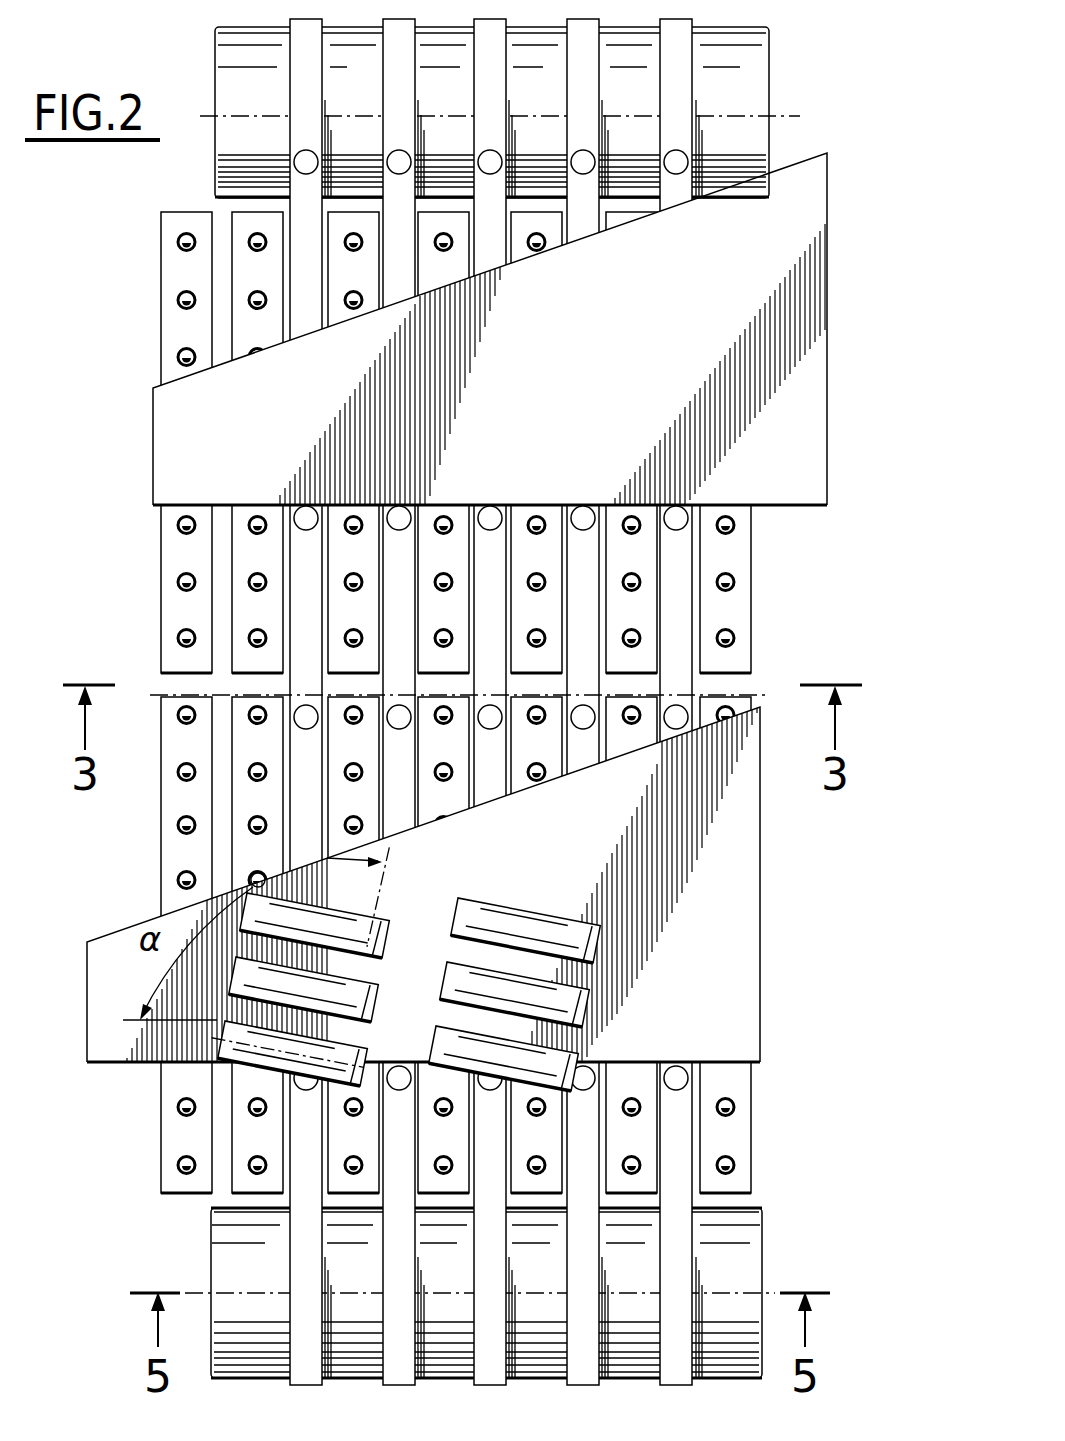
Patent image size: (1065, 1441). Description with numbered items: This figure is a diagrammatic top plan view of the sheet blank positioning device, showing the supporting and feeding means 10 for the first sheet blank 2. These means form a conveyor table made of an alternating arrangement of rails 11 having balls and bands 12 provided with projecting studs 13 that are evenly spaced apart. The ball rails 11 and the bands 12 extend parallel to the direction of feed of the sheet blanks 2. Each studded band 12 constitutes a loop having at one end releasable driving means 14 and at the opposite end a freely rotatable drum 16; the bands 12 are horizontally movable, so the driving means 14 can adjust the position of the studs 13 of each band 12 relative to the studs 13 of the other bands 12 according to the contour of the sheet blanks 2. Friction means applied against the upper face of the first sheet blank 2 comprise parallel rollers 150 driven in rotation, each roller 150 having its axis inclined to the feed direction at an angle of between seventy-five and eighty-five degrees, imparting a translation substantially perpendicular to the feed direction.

The first sheet blank 2 is at (808, 380).
The supporting and feeding means 10 is at (142, 540).
The rails having balls 11 is at (448, 270).
The bands 12 is at (590, 238).
The projecting studs 13 is at (397, 1062).
The releasable driving means 14 is at (222, 1256).
The freely rotatable drum 16 is at (760, 97).
The rollers 150 is at (353, 923).